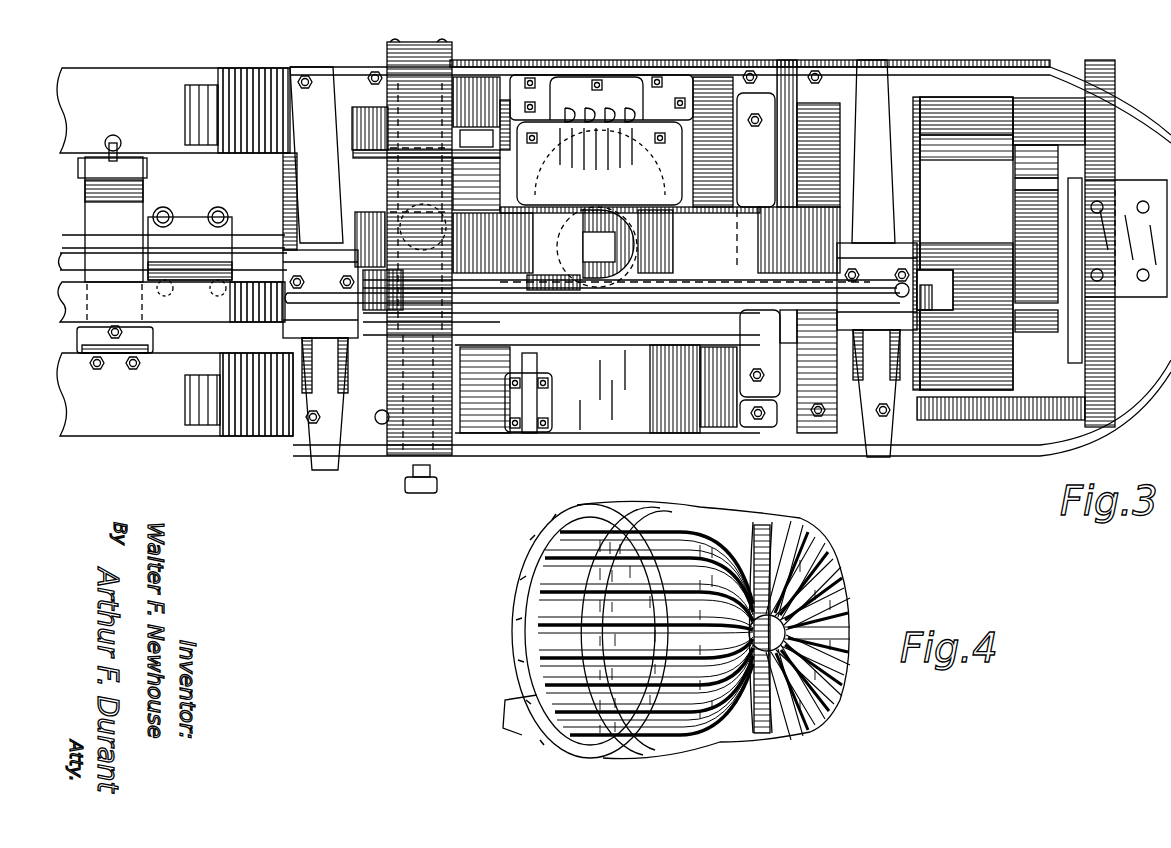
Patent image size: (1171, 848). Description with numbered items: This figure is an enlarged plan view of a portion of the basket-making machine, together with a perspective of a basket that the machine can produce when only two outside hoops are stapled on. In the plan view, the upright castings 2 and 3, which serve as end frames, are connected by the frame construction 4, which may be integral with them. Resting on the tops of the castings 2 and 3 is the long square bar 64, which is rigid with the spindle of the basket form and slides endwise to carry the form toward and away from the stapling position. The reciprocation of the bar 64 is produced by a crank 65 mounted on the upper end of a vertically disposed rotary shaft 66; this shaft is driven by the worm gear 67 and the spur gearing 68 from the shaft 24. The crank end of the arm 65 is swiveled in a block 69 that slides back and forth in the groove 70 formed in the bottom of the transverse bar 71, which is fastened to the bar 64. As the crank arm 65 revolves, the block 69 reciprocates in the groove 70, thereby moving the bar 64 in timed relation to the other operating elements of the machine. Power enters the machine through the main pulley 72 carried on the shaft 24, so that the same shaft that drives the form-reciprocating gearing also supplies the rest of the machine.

The upright casting 2 is at (342, 155).
The upright casting 3 is at (897, 150).
The frame construction 4 is at (771, 240).
The shaft 24 is at (255, 250).
The long square bar 64 is at (188, 303).
The crank 65 is at (483, 230).
The rotary shaft 66 is at (590, 250).
The worm gear 67 is at (613, 147).
The spur gearing 68 is at (713, 133).
The block 69 is at (462, 185).
The groove 70 is at (440, 137).
The transverse bar 71 is at (420, 48).
The main pulley 72 is at (963, 243).